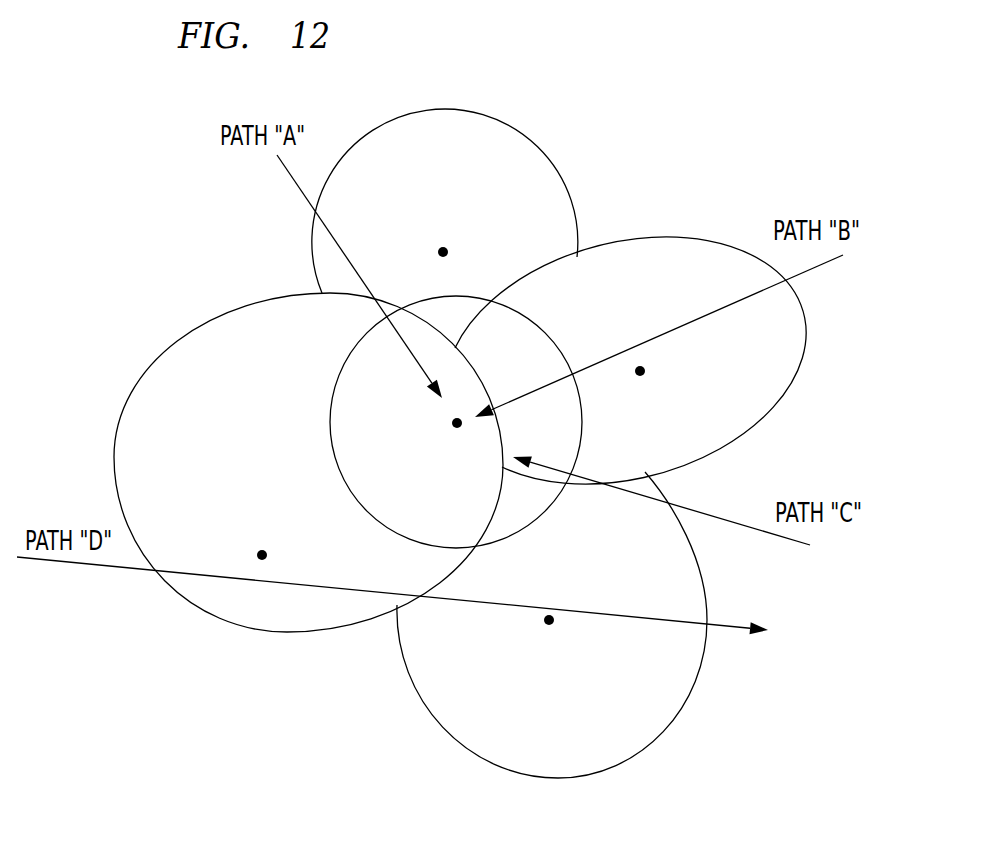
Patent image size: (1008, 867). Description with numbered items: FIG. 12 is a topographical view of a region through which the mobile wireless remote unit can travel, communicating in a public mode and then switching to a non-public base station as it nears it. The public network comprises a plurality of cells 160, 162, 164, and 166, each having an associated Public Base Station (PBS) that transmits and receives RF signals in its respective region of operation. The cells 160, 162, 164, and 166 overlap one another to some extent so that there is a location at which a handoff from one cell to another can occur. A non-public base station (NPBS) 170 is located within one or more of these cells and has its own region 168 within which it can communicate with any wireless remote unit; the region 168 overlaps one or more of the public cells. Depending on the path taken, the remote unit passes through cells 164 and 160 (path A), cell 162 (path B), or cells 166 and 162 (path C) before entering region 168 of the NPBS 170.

The cell 160 is at (190, 338).
The cell 162 is at (680, 253).
The cell 164 is at (523, 162).
The cell 166 is at (663, 705).
The region 168 is at (337, 373).
The non-public base station (NPBS) 170 is at (458, 417).